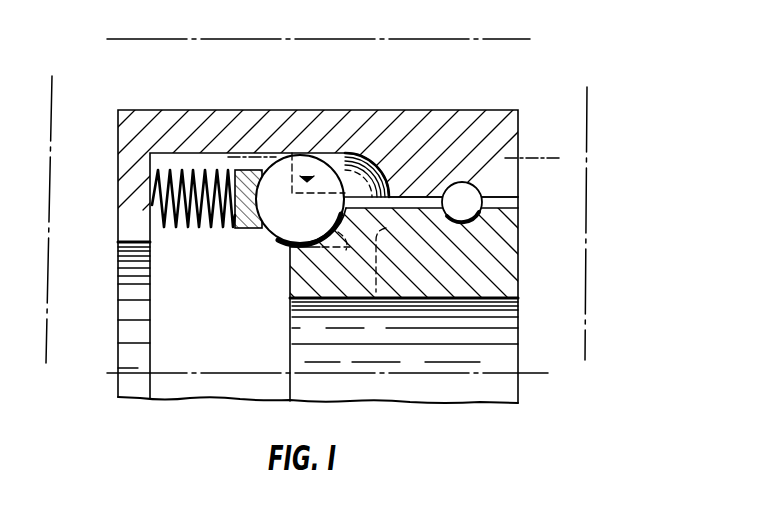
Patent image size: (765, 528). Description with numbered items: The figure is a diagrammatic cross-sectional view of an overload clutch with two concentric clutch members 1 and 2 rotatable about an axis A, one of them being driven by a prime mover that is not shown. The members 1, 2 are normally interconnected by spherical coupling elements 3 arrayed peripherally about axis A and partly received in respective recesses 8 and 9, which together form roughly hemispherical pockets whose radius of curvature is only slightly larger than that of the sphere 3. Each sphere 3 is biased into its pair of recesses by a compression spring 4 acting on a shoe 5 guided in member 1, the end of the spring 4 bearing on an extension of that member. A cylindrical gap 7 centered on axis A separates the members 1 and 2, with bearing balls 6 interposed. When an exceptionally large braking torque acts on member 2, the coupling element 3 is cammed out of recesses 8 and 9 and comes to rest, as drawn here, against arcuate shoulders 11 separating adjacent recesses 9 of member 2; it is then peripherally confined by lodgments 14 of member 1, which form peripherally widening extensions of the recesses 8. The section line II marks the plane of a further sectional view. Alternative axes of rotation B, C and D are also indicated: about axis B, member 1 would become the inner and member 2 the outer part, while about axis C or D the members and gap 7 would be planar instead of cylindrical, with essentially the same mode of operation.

The clutch member 1 is at (491, 110).
The clutch member 2 is at (498, 272).
The spherical coupling element 3 is at (276, 226).
The compression spring 4 is at (187, 222).
The shoe 5 is at (241, 230).
The bearing ball 6 is at (462, 196).
The cylindrical gap 7 is at (421, 200).
The recess 8 is at (367, 158).
The recess 9 is at (376, 292).
The arcuate shoulder 11 is at (342, 213).
The lodgment 14 is at (307, 176).
The axis A is at (491, 376).
The axis of rotation B is at (131, 38).
The axis of rotation C is at (587, 190).
The axis of rotation D is at (50, 187).
The section plane II- II is at (238, 153).